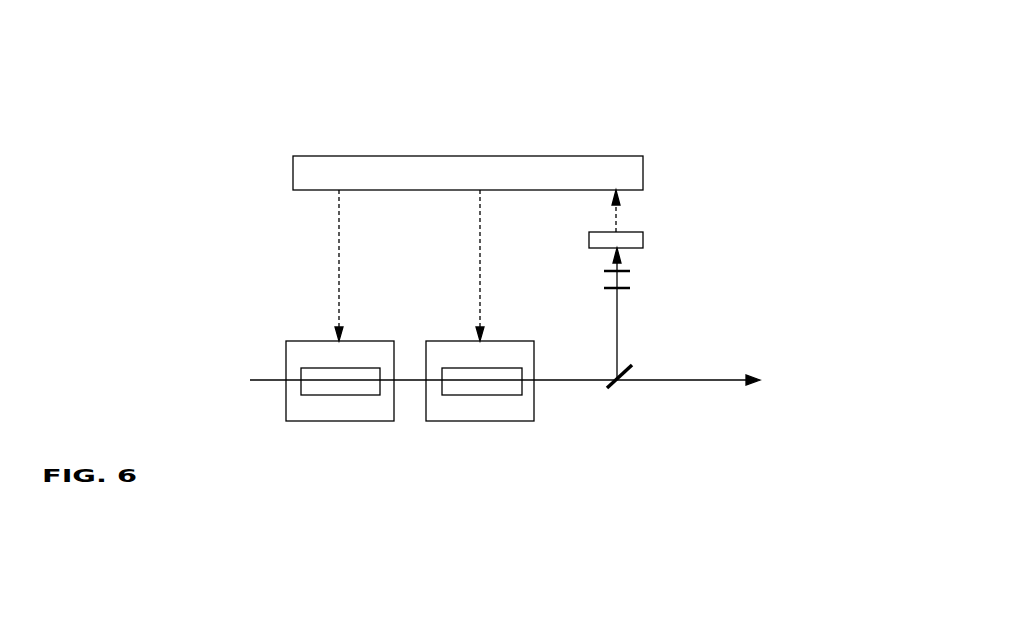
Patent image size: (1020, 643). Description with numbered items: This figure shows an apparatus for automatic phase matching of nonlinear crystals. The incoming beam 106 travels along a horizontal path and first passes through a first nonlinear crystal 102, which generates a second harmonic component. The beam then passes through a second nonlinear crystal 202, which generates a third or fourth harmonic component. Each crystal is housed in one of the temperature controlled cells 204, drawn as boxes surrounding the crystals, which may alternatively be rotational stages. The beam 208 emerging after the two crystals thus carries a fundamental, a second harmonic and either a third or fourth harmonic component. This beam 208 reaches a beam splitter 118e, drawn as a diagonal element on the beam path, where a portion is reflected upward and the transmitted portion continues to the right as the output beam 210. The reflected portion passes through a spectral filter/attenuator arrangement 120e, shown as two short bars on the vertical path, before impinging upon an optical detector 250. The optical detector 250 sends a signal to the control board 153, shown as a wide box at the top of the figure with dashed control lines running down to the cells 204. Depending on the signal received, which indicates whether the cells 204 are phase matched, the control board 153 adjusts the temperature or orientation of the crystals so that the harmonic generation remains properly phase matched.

The control board 153 is at (372, 156).
The optical detector 250 is at (645, 238).
The spectral filter/attenuator arrangement 120e is at (632, 288).
The incoming beam 106 is at (454, 369).
The first nonlinear crystal 102 is at (312, 396).
The second nonlinear crystal 202 is at (482, 396).
The temperature controlled cells 204 is at (433, 421).
The beam after the two crystals 208 is at (585, 392).
The output beam 210 is at (675, 391).
The beam splitter 118e is at (620, 383).